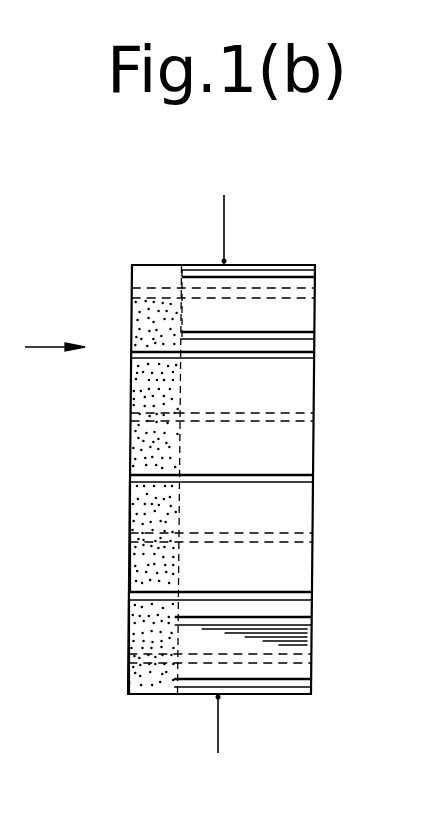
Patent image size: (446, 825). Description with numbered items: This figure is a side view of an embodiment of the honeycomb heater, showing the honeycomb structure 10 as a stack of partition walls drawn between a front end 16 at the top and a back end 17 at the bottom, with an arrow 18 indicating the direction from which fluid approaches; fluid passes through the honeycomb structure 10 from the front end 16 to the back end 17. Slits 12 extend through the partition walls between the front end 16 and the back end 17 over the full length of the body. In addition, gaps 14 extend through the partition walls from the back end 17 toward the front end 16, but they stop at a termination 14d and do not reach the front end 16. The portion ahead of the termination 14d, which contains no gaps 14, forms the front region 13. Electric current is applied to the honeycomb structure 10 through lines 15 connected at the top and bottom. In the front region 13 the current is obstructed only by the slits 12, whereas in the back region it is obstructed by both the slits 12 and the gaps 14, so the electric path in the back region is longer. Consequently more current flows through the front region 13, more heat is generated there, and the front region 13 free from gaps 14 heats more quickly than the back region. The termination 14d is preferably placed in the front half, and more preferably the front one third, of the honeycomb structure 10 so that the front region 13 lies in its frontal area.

The honeycomb structure 10 is at (221, 474).
The slits 12 is at (312, 598).
The front region 13 is at (153, 317).
The gaps 14 is at (312, 622).
The termination 14d is at (175, 617).
The lines 15 is at (224, 222).
The front end 16 is at (130, 515).
The back end 17 is at (315, 503).
The incident light 18 is at (52, 347).